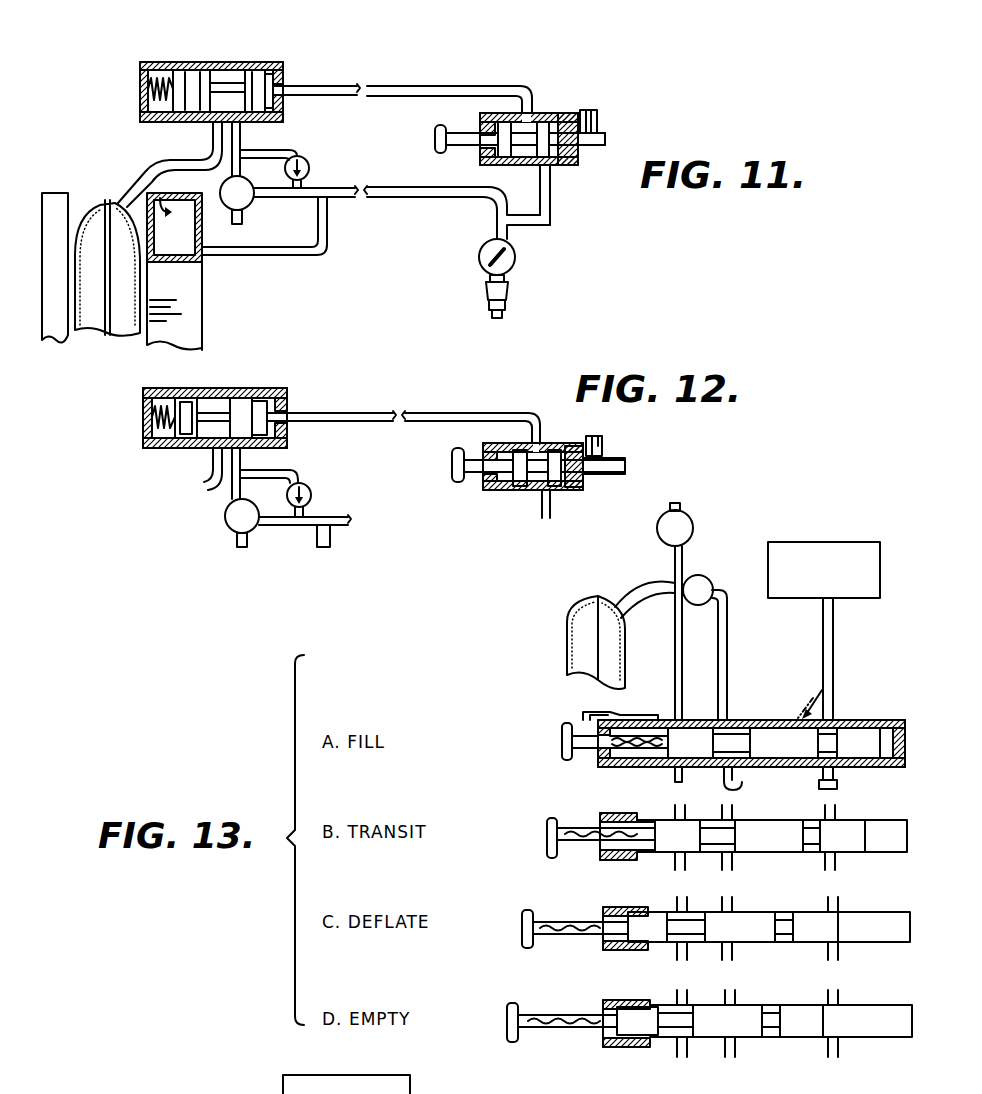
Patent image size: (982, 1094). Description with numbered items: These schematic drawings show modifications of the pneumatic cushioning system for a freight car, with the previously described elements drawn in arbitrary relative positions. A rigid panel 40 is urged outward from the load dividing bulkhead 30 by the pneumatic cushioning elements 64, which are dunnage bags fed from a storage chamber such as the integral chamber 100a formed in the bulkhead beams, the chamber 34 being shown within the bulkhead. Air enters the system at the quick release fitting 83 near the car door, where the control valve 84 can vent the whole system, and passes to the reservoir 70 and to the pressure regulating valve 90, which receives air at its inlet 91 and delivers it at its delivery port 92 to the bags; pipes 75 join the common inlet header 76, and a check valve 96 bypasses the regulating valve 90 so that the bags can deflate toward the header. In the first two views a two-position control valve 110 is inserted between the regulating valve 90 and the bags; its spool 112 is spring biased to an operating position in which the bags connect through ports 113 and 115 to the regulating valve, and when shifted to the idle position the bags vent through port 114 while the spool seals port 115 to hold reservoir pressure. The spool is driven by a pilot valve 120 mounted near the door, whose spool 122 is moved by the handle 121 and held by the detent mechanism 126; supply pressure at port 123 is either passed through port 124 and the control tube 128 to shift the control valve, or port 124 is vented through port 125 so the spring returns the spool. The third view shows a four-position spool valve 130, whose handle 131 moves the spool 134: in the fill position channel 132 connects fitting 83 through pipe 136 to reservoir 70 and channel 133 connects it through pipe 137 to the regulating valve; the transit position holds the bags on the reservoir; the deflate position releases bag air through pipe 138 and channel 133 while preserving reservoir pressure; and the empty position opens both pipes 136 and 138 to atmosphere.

In FIG. 11, the load dividing bulkhead 30 is at (206, 321).
In FIG. 11, the reservoir inlet chamber 34 is at (183, 263).
In FIG. 11, the panel 40 is at (50, 314).
In FIG. 11, the pneumatic cushioning element 64 is at (100, 330).
In FIG. 13, the pneumatic cushioning element 64 is at (567, 626).
In FIG. 13, the reservoir 70 is at (868, 543).
In FIG. 11, the pipe 75 is at (329, 220).
In FIG. 12, the pipe 75 is at (332, 545).
In FIG. 11, the inlet header 76 is at (322, 188).
In FIG. 12, the inlet header 76 is at (340, 518).
In FIG. 11, the quick release fitting 83 is at (508, 292).
In FIG. 13, the quick release fitting 83 is at (838, 786).
In FIG. 11, the control valve 84 is at (478, 258).
In FIG. 11, the pressure regulating valve 90 is at (251, 203).
In FIG. 12, the pressure regulating valve 90 is at (251, 536).
In FIG. 13, the pressure regulating valve 90 is at (706, 578).
In FIG. 13, the pressure inlet of pressure regulating valve 91 is at (654, 582).
In FIG. 11, the delivery port connection 92 is at (242, 164).
In FIG. 12, the delivery port connection 92 is at (238, 495).
In FIG. 13, the delivery port connection 92 is at (694, 526).
In FIG. 11, the check valve 96 is at (308, 157).
In FIG. 12, the check valve 96 is at (310, 487).
In FIG. 11, the integral storage chamber 100a is at (140, 170).
In FIG. 11, the control valve 110 is at (290, 74).
In FIG. 12, the control valve 110 is at (292, 404).
In FIG. 11, the control valve spool 112 is at (259, 62).
In FIG. 12, the control valve spool 112 is at (246, 400).
In FIG. 11, the valve port 113 is at (212, 132).
In FIG. 12, the valve port 113 is at (212, 462).
In FIG. 11, the valve port 114 is at (222, 50).
In FIG. 12, the valve port 114 is at (243, 380).
In FIG. 11, the valve port 115 is at (247, 122).
In FIG. 12, the valve port 115 is at (246, 448).
In FIG. 11, the pilot valve 120 is at (592, 148).
In FIG. 12, the pilot valve 120 is at (605, 486).
In FIG. 11, the handle 121 is at (436, 126).
In FIG. 12, the handle 121 is at (452, 458).
In FIG. 11, the pilot valve spool 122 is at (478, 163).
In FIG. 12, the pilot valve spool 122 is at (520, 496).
In FIG. 11, the pilot valve port 123 is at (551, 175).
In FIG. 12, the pilot valve port 123 is at (551, 502).
In FIG. 11, the pilot valve port 124 is at (535, 112).
In FIG. 12, the pilot valve port 124 is at (548, 444).
In FIG. 11, the pilot valve port 125 is at (500, 116).
In FIG. 12, the pilot valve port 125 is at (515, 446).
In FIG. 11, the detent mechanism 126 is at (597, 110).
In FIG. 12, the detent mechanism 126 is at (603, 447).
In FIG. 13, the detent mechanism 126 is at (598, 714).
In FIG. 11, the control tube 128 is at (494, 70).
In FIG. 12, the control tube 128 is at (496, 414).
In FIG. 13, the spool valve 130 is at (895, 714).
In FIG. 13, the valve handle 131 is at (560, 736).
In FIG. 13, the valve channel 132 is at (836, 718).
In FIG. 13, the valve channel 133 is at (738, 718).
In FIG. 13, the valve spool 134 is at (880, 743).
In FIG. 13, the pipe 136 is at (833, 639).
In FIG. 13, the pipe 137 is at (730, 665).
In FIG. 13, the pipe 138 is at (673, 662).